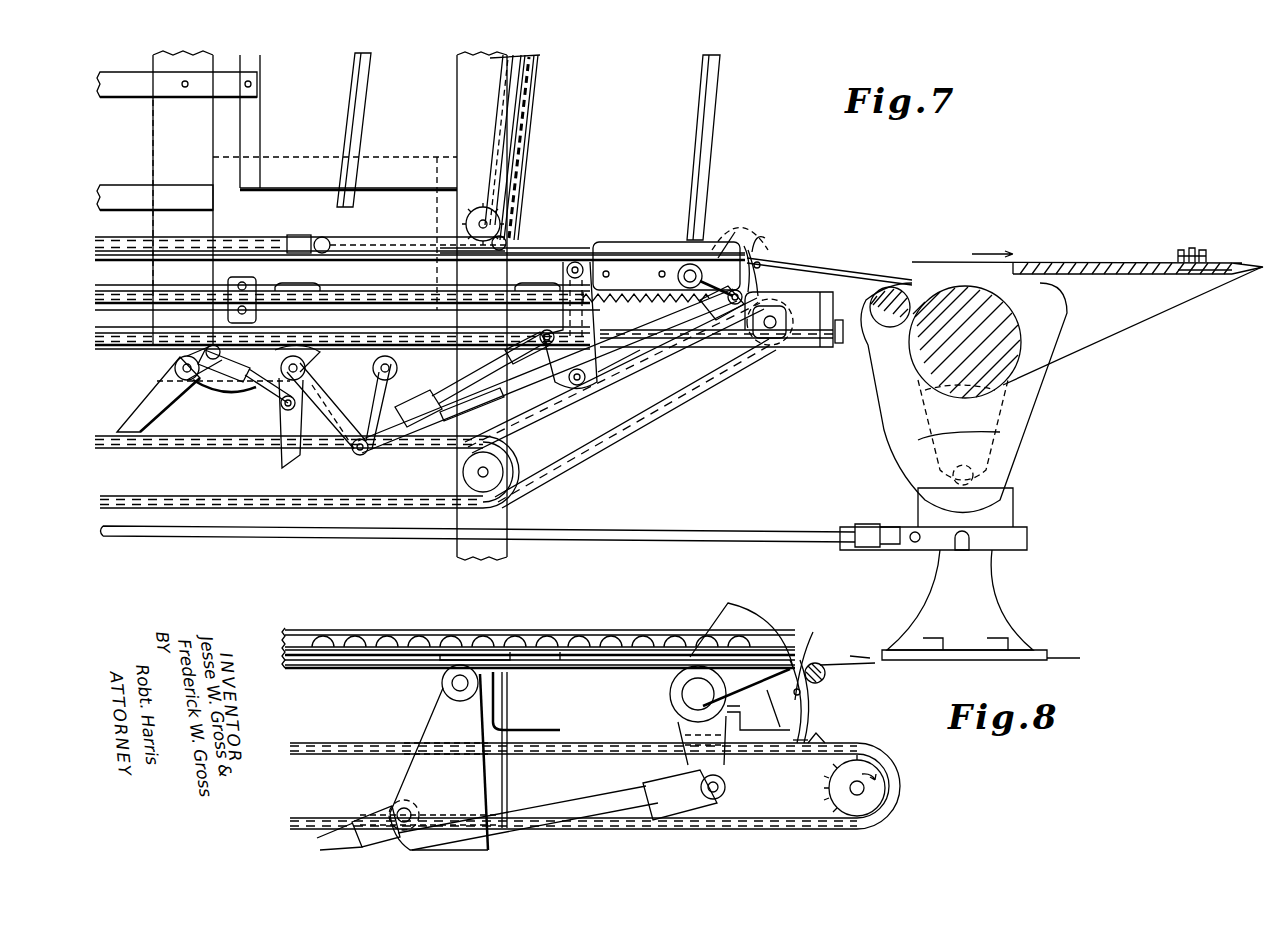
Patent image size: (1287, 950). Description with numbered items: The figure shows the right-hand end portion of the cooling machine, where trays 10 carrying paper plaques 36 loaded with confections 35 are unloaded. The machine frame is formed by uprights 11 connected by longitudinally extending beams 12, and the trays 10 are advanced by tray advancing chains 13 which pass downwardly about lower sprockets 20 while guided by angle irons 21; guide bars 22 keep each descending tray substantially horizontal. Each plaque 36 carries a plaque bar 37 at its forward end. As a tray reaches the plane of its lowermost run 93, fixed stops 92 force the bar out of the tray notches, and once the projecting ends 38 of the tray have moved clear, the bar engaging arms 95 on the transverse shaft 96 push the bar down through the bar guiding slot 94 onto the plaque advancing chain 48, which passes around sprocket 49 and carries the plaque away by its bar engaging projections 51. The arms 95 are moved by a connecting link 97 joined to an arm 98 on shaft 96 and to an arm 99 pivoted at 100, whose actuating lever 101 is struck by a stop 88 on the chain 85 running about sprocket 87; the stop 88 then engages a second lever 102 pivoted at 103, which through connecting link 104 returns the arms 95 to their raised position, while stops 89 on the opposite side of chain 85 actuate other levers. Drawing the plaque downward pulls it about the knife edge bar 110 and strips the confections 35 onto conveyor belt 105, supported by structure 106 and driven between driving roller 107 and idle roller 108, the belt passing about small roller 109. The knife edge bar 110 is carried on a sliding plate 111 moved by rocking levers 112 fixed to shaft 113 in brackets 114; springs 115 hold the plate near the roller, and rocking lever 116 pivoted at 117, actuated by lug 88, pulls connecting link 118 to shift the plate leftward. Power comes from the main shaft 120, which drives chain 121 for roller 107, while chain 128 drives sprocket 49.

In FIG. 7, the tray 10 is at (568, 241).
In FIG. 8, the tray 10 is at (346, 663).
In FIG. 7, the upright 11 is at (152, 126).
In FIG. 7, the beam 12 is at (120, 78).
In FIG. 7, the tray advancing chain 13 is at (530, 153).
In FIG. 7, the lower sprocket 20 is at (465, 218).
In FIG. 7, the angle iron 21 is at (538, 110).
In FIG. 7, the guide bar 22 is at (352, 96).
In FIG. 8, the confection 35 is at (648, 636).
In FIG. 8, the plaque 36 is at (562, 631).
In FIG. 7, the plaque bar 37 is at (752, 246).
In FIG. 8, the plaque bar 37 is at (806, 691).
In FIG. 7, the projecting end 38 is at (755, 250).
In FIG. 7, the plaque advancing chain 48 is at (722, 360).
In FIG. 8, the plaque advancing chain 48 is at (870, 749).
In FIG. 7, the sprocket 49 is at (781, 340).
In FIG. 8, the sprocket 49 is at (876, 787).
In FIG. 8, the bar engaging projection 51 is at (818, 740).
In FIG. 7, the chain 85 is at (208, 449).
In FIG. 7, the sprocket 87 is at (462, 471).
In FIG. 7, the stop 88 is at (298, 430).
In FIG. 7, the stop 89 is at (357, 456).
In FIG. 7, the fixed stop 92 is at (727, 232).
In FIG. 8, the fixed stop 92 is at (760, 627).
In FIG. 7, the lowermost run 93 is at (248, 238).
In FIG. 7, the bar guiding slot 94 is at (762, 262).
In FIG. 8, the bar guiding slot 94 is at (805, 637).
In FIG. 7, the bar engaging arm 95 is at (718, 232).
In FIG. 8, the bar engaging arm 95 is at (792, 714).
In FIG. 7, the shaft 96 is at (678, 278).
In FIG. 8, the shaft 96 is at (682, 694).
In FIG. 7, the connecting link 97 is at (560, 399).
In FIG. 8, the connecting link 97 is at (590, 811).
In FIG. 8, the arm 98 is at (696, 772).
In FIG. 7, the arm 99 is at (323, 403).
In FIG. 7, the pivot 100 is at (306, 358).
In FIG. 7, the actuating lever 101 is at (283, 409).
In FIG. 7, the lever 102 is at (158, 389).
In FIG. 7, the pivot 103 is at (176, 365).
In FIG. 7, the connecting link 104 is at (242, 391).
In FIG. 7, the conveyor belt 105 is at (1058, 262).
In FIG. 8, the conveyor belt 105 is at (848, 660).
In FIG. 7, the supporting structure 106 is at (995, 577).
In FIG. 7, the driving roller 107 is at (1005, 325).
In FIG. 7, the idle roller 108 is at (895, 340).
In FIG. 7, the small roller 109 is at (829, 271).
In FIG. 8, the small roller 109 is at (826, 675).
In FIG. 7, the knife edge bar 110 is at (738, 296).
In FIG. 8, the knife edge bar 110 is at (780, 659).
In FIG. 7, the sliding plate 111 is at (383, 263).
In FIG. 8, the sliding plate 111 is at (383, 670).
In FIG. 7, the rocking lever 112 is at (566, 289).
In FIG. 8, the rocking lever 112 is at (400, 781).
In FIG. 7, the shaft 113 is at (588, 382).
In FIG. 7, the bracket 114 is at (630, 367).
In FIG. 7, the spring 115 is at (606, 306).
In FIG. 7, the rocking lever 116 is at (402, 402).
In FIG. 7, the pivot 117 is at (486, 379).
In FIG. 7, the connecting link 118 is at (486, 399).
In FIG. 8, the connecting link 118 is at (340, 837).
In FIG. 7, the shaft 120 is at (605, 529).
In FIG. 7, the chain 121 is at (915, 424).
In FIG. 7, the chain 128 is at (640, 419).